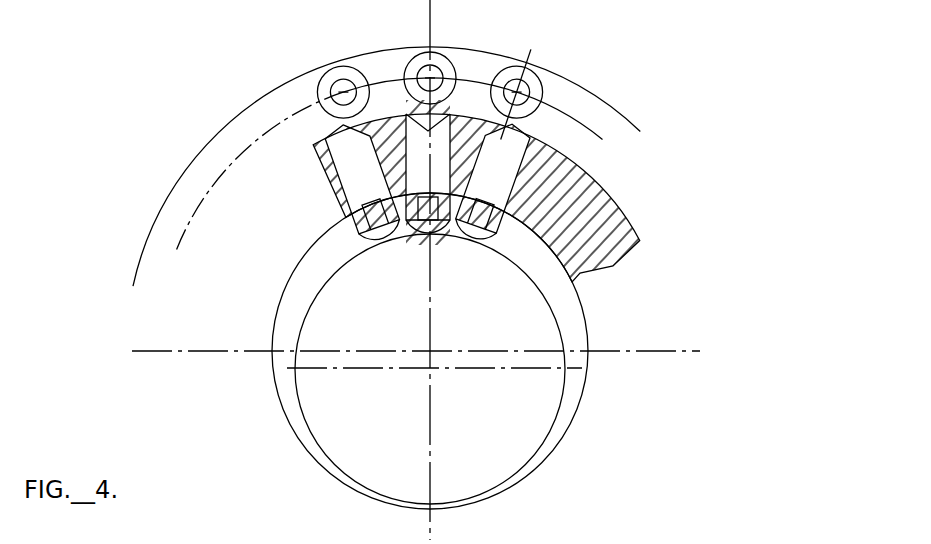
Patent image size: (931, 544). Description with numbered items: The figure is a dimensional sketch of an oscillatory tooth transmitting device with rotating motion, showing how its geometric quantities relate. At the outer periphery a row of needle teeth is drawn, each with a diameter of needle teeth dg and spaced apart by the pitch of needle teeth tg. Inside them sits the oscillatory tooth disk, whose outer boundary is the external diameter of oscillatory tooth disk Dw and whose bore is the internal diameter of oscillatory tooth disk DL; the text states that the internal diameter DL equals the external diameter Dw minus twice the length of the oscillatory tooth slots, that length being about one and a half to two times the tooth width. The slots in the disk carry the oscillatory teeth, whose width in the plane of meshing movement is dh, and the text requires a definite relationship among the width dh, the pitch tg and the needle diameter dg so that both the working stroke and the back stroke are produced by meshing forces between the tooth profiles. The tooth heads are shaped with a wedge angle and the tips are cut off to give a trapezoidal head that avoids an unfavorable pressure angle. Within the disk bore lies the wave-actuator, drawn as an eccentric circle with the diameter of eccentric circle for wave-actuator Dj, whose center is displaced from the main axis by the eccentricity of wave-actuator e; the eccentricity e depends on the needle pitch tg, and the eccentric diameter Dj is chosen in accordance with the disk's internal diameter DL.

The diameter of needle teeth dg is at (410, 95).
The pitch of needle teeth tg is at (500, 110).
The width of oscillatory teeth dh is at (450, 170).
The oscillating tooth height Ts is at (343, 125).
The external diameter of oscillatory tooth disk Dw is at (479, 381).
The needle pitch circle diameter Dg is at (484, 373).
The internal diameter of oscillatory tooth disk DL is at (473, 390).
The diameter of eccentric circle for wave-actuator Dj is at (493, 250).
The eccentricity of wave-actuator e is at (539, 393).